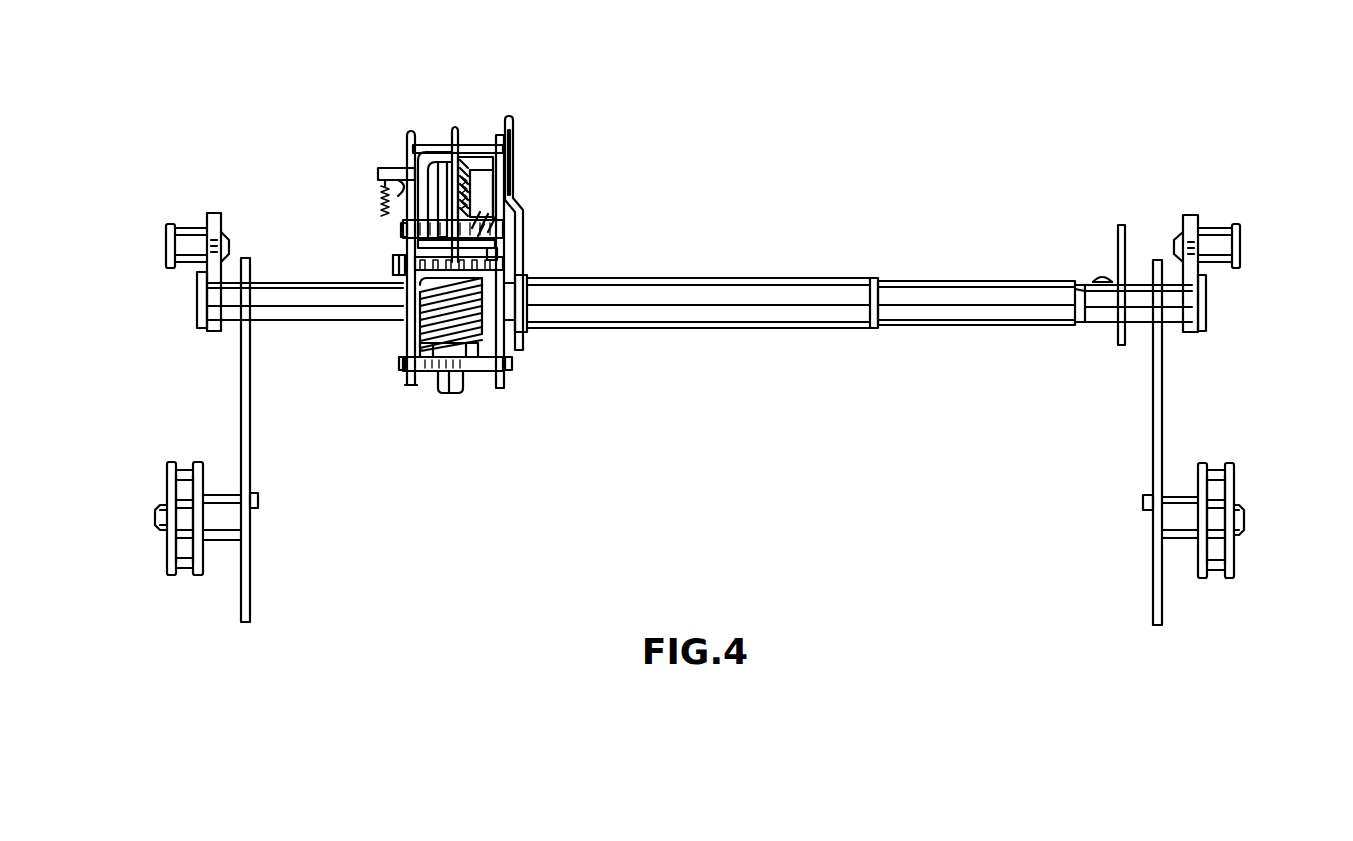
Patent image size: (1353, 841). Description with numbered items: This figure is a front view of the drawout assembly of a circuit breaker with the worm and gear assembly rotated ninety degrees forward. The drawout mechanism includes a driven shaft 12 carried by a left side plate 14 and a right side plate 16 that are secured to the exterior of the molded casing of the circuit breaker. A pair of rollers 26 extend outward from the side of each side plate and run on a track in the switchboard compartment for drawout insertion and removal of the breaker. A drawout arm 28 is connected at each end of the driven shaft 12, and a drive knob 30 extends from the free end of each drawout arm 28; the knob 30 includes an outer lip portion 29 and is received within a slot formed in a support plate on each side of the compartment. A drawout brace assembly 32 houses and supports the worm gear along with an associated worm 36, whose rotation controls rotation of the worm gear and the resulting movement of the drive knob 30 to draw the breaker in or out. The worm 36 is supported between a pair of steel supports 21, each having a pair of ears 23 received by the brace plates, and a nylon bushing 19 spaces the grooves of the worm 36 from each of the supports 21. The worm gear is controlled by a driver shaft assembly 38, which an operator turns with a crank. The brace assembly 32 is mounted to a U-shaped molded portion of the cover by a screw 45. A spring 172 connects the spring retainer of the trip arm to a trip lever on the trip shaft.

The driven shaft 12 is at (728, 290).
The left side plate 14 is at (250, 448).
The right side plate 16 is at (1155, 415).
The nylon bushing 19 is at (420, 245).
The steel supports 21 is at (438, 160).
The ears 23 is at (405, 233).
The rollers 26 is at (167, 483).
The drawout arm 28 is at (215, 217).
The outer lip portion 29 is at (167, 257).
The drive knob 30 is at (188, 228).
The drawout brace assembly 32 is at (527, 110).
The worm 36 is at (472, 360).
The driver shaft assembly 38 is at (442, 380).
The screw 45 is at (395, 260).
The spring 172 is at (381, 195).